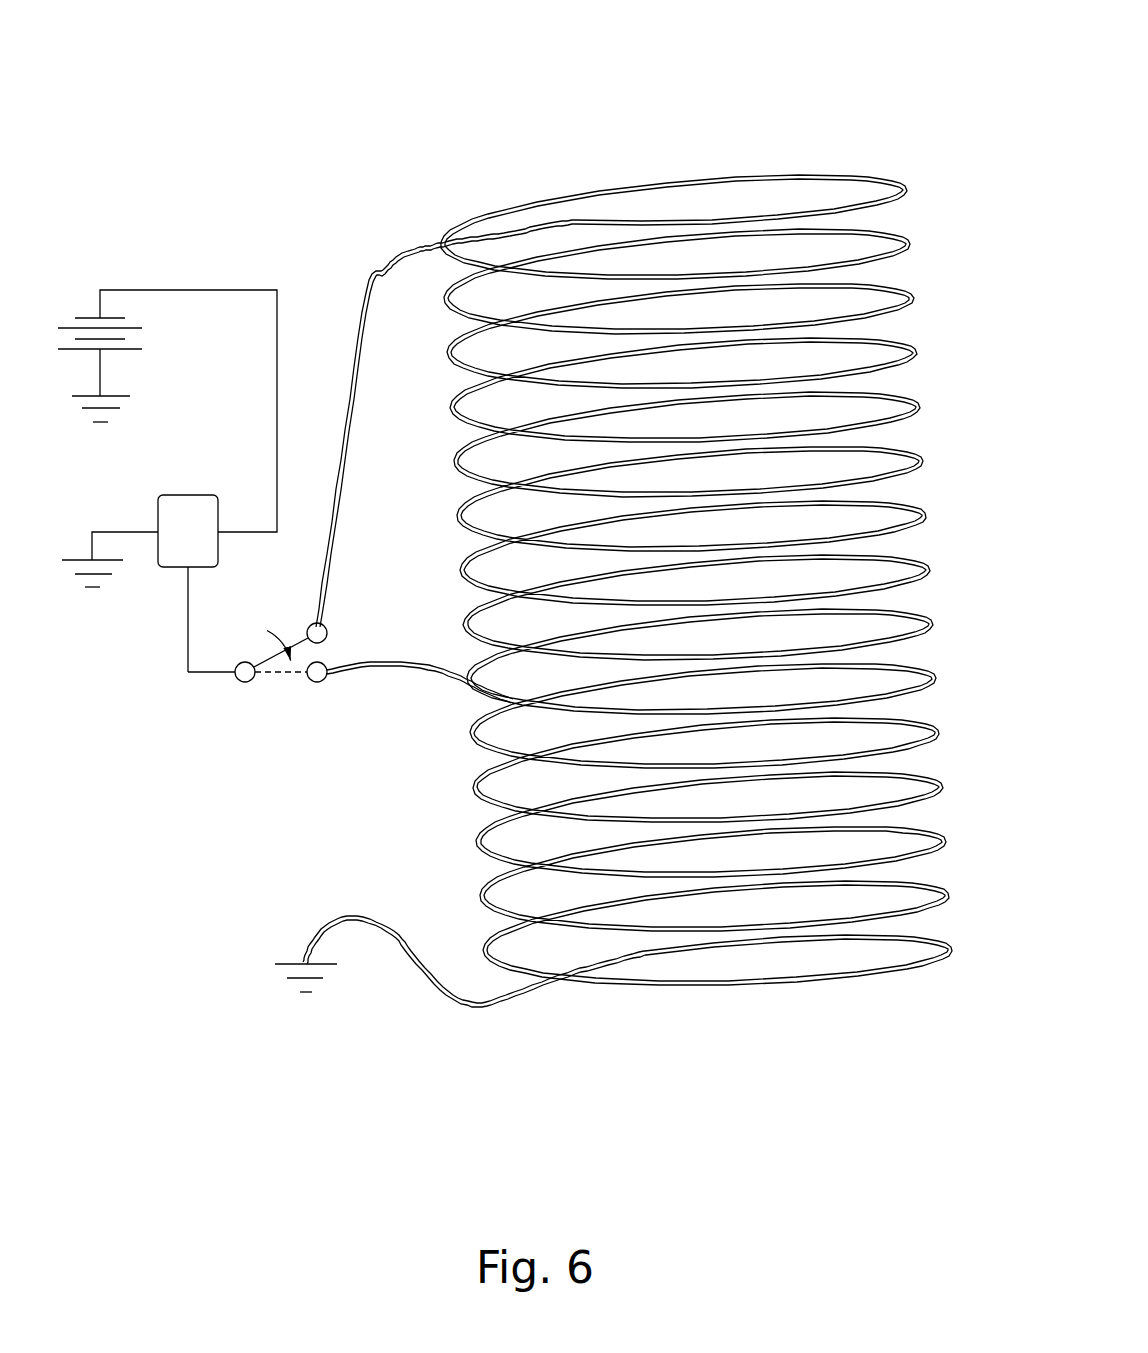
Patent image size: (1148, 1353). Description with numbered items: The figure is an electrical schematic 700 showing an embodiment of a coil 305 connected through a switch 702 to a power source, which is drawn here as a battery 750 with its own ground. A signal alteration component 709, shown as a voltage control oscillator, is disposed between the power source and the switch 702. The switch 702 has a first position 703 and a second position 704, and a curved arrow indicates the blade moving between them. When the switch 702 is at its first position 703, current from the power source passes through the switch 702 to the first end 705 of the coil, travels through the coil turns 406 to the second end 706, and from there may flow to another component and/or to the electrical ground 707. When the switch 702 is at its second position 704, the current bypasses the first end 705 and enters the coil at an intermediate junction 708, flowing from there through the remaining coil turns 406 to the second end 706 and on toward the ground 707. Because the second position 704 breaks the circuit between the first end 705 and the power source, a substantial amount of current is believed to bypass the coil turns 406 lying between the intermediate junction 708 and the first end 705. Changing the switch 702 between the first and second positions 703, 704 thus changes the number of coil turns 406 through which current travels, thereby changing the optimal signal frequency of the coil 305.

The electrical schematic 700 is at (218, 142).
The coil 305 is at (682, 150).
The coil turns 406 is at (887, 167).
The first end of the coil 705 is at (433, 243).
The second end of the coil 706 is at (505, 1012).
The electrical ground 707 is at (283, 997).
The intermediate junction 708 is at (462, 693).
The switch 702 is at (272, 682).
The first position 703 is at (337, 617).
The second position 704 is at (316, 685).
The signal alteration component 709 is at (152, 493).
The battery 750 is at (150, 340).